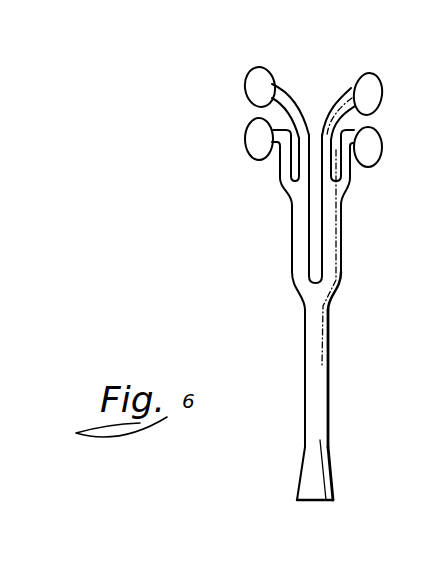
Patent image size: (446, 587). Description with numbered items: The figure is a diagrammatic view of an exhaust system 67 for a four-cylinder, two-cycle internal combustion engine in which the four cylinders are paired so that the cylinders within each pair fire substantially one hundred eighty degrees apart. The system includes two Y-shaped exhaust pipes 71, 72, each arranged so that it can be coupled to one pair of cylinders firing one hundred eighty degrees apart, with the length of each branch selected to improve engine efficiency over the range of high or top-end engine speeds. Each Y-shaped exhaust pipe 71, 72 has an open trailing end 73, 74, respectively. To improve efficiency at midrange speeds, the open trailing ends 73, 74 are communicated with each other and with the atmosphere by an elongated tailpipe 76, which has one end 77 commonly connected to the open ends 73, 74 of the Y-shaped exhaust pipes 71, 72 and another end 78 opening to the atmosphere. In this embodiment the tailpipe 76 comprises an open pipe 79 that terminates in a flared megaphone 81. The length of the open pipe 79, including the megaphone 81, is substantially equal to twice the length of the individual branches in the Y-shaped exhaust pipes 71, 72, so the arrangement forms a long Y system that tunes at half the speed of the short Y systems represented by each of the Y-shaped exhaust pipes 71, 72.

The exhaust system 67 is at (340, 312).
The Y-shaped exhaust pipe 71 is at (295, 220).
The Y-shaped exhaust pipe 72 is at (333, 227).
The trailing end 73 is at (291, 273).
The trailing end 74 is at (342, 280).
The end 77 is at (298, 303).
The tailpipe 76 is at (340, 370).
The open pipe 79 is at (312, 390).
The flared megaphone 81 is at (306, 447).
The end 78 is at (322, 503).